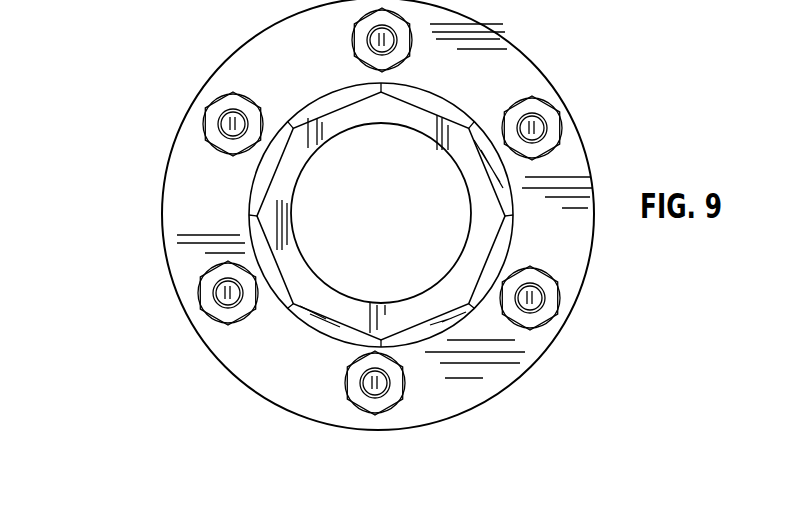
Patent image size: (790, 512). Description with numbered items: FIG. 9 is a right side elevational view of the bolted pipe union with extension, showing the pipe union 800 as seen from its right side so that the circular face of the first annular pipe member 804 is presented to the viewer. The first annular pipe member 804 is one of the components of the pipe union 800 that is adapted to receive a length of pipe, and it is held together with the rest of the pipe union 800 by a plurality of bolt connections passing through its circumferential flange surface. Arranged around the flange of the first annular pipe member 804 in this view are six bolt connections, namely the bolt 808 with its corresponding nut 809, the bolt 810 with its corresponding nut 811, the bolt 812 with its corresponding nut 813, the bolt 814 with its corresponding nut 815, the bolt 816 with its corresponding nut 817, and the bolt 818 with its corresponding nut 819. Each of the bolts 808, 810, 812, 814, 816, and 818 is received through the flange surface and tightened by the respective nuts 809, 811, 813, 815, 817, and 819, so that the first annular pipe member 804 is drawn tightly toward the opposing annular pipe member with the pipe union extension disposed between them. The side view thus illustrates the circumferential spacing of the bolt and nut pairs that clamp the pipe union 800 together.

The pipe union 800 is at (205, 40).
The first annular pipe member 804 is at (512, 196).
The bolt 808 is at (388, 36).
The nut 809 is at (400, 63).
The bolt 810 is at (223, 118).
The nut 811 is at (212, 147).
The bolt 812 is at (218, 285).
The nut 813 is at (211, 313).
The bolt 814 is at (372, 379).
The nut 815 is at (356, 400).
The bolt 816 is at (538, 293).
The nut 817 is at (545, 325).
The bolt 818 is at (540, 116).
The nut 819 is at (555, 132).